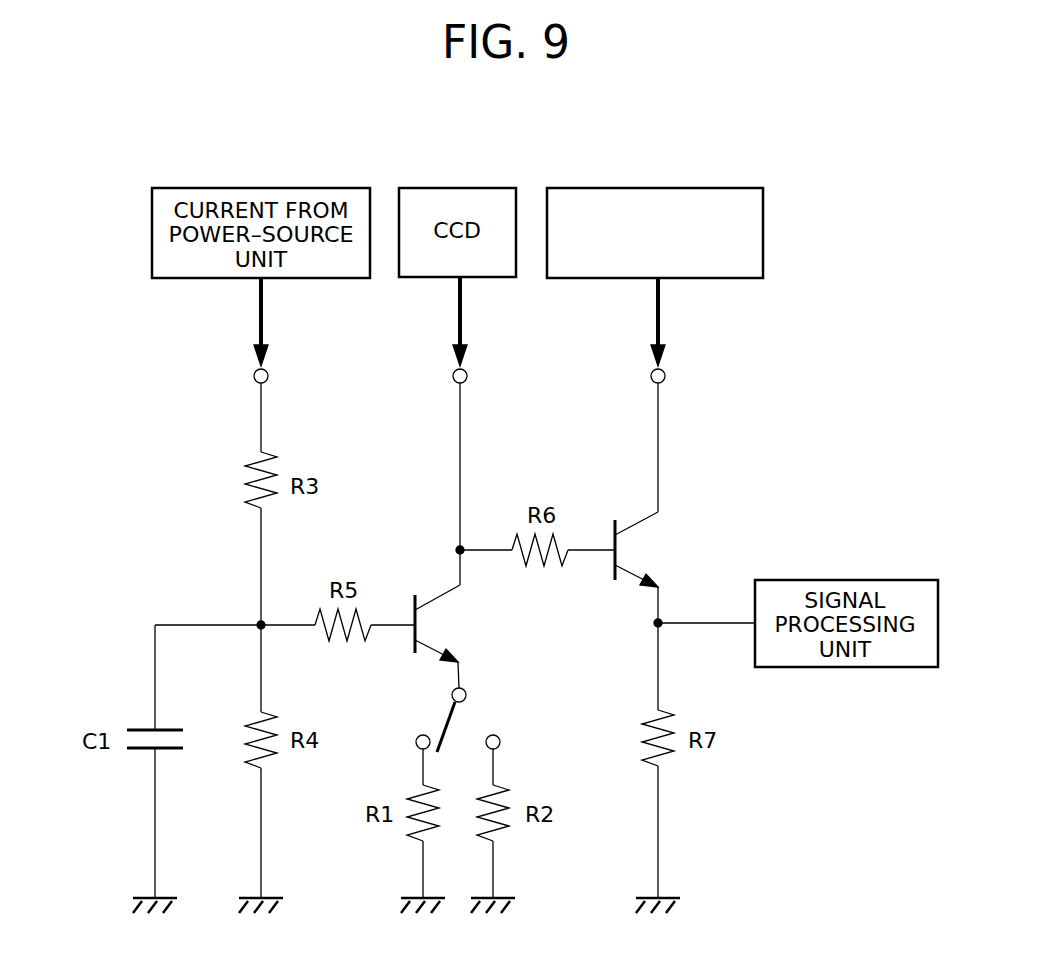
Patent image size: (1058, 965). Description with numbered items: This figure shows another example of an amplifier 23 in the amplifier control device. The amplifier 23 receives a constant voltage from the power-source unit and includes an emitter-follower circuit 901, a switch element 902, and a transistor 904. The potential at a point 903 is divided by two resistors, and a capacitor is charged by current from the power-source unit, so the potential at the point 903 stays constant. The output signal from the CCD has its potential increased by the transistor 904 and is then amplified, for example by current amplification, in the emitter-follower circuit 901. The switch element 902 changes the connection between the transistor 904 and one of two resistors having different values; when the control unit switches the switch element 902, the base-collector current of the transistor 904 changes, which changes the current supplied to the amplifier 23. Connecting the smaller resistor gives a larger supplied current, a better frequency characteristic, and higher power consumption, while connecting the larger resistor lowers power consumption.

The amplifier 23 is at (770, 165).
The emitter-follower circuit 901 is at (722, 450).
The switch element 902 is at (510, 709).
The point 903 is at (261, 623).
The transistor 904 is at (437, 602).